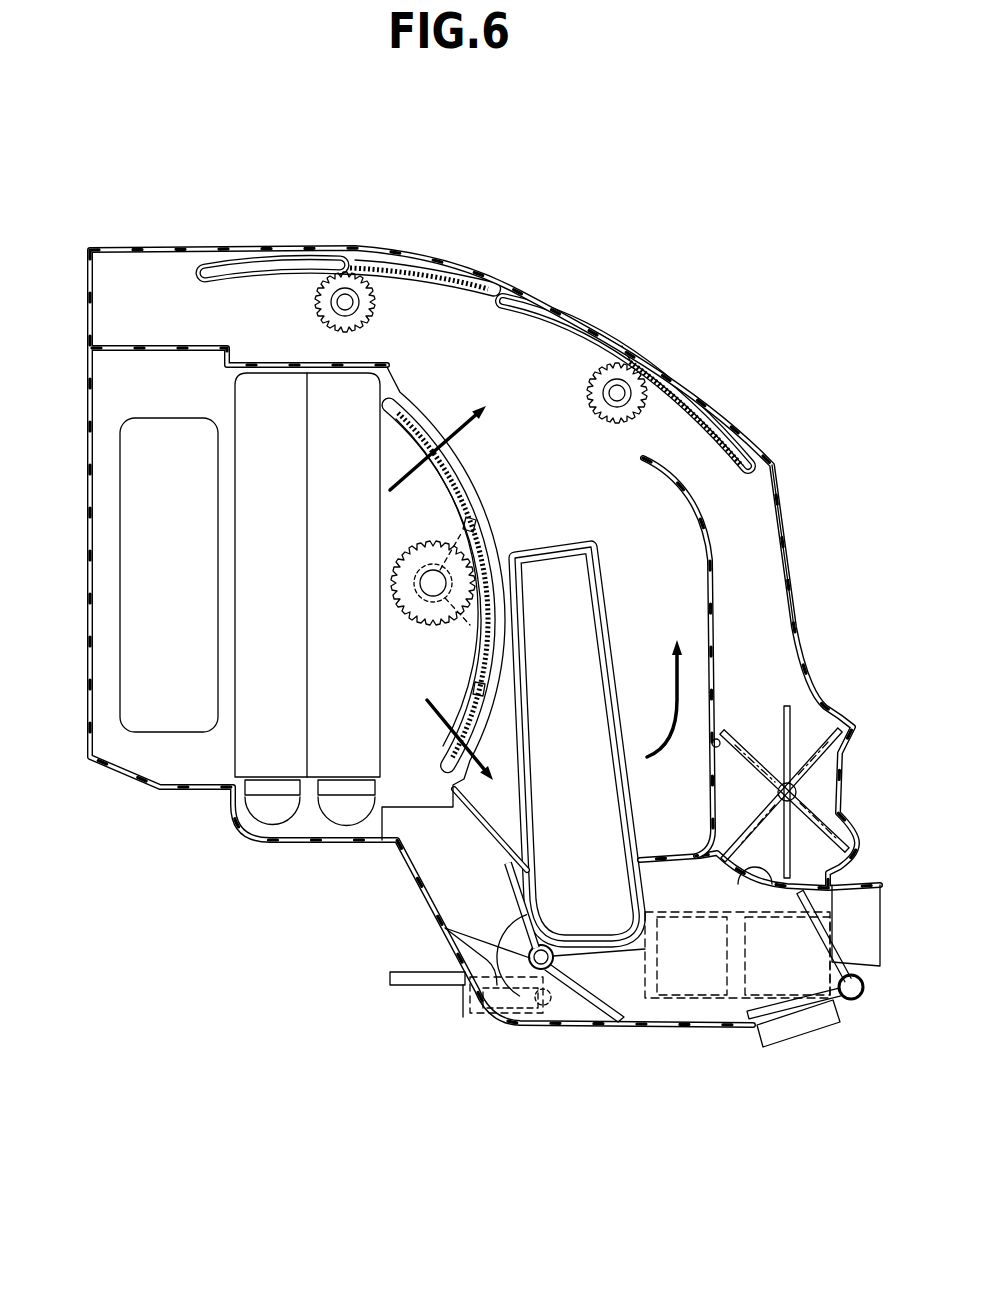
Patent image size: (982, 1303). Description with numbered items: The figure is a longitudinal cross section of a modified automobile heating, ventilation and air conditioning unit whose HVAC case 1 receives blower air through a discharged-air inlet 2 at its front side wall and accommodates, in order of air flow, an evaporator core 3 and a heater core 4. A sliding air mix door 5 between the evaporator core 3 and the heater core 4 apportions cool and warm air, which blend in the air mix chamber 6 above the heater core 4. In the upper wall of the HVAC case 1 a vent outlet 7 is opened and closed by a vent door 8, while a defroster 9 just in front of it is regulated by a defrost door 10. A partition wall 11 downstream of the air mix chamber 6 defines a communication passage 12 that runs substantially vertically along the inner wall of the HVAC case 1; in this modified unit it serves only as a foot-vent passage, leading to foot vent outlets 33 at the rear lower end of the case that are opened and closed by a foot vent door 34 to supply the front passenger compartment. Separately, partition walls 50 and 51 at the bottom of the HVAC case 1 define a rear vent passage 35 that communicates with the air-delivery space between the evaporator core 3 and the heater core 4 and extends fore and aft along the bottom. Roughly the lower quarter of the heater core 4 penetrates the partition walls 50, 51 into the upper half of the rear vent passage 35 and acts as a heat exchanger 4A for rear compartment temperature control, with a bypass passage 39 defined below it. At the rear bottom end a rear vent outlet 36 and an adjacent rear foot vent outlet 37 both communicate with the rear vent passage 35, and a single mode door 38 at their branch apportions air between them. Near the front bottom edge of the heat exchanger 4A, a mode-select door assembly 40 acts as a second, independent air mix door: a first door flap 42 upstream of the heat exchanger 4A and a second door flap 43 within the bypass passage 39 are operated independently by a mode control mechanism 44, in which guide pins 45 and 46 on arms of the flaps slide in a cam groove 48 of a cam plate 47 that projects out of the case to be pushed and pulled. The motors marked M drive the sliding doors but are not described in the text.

The HVAC case 1 is at (133, 240).
The discharged-air inlet 2 is at (122, 665).
The evaporator core 3 is at (243, 738).
The heater core 4 is at (552, 667).
The heat exchanger 4A is at (600, 900).
The air mix door 5 is at (482, 506).
The air mix chamber 6 is at (585, 489).
The vent outlet 7 is at (582, 312).
The vent door 8 is at (690, 395).
The defroster 9 is at (405, 258).
The defrost door 10 is at (455, 283).
The partition wall 11 is at (700, 553).
The communication passage 12 is at (750, 530).
The foot vent outlets 33 is at (736, 1045).
The foot vent door 34 is at (783, 710).
The rear vent passage 35 is at (717, 950).
The rear vent outlet 36 is at (868, 922).
The rear foot vent outlet 37 is at (828, 1040).
The mode door 38 is at (772, 885).
The bypass passage 39 is at (637, 1010).
The mode-select door assembly 40 is at (497, 895).
The first door flap 42 is at (500, 876).
The second door flap 43 is at (585, 1030).
The mode control mechanism 44 is at (572, 1010).
The guide pin 45 is at (512, 1015).
The guide pin 46 is at (542, 1005).
The cam plate 47 is at (478, 1032).
The cam groove 48 is at (445, 945).
The partition wall 50 is at (476, 808).
The partition wall 51 is at (797, 1030).
The motor M is at (388, 310).